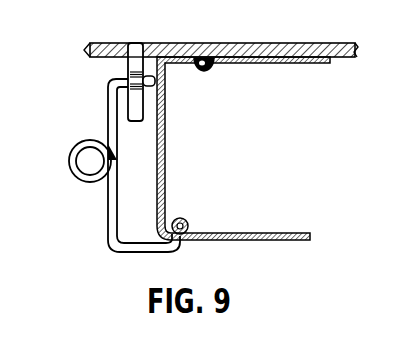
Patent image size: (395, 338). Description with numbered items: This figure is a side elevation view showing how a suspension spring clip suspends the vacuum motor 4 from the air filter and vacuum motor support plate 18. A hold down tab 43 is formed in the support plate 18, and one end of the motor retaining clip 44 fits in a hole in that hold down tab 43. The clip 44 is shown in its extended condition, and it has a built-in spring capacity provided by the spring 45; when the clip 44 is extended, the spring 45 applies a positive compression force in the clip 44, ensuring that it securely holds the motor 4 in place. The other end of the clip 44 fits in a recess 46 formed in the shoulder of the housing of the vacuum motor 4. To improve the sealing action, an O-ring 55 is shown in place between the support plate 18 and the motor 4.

The vacuum motor 4 is at (224, 142).
The support plate 18 is at (301, 43).
The hold down tab 43 is at (128, 62).
The motor retaining clip 44 is at (108, 112).
The spring 45 is at (70, 163).
The recess 46 is at (188, 223).
The O-ring 55 is at (210, 71).